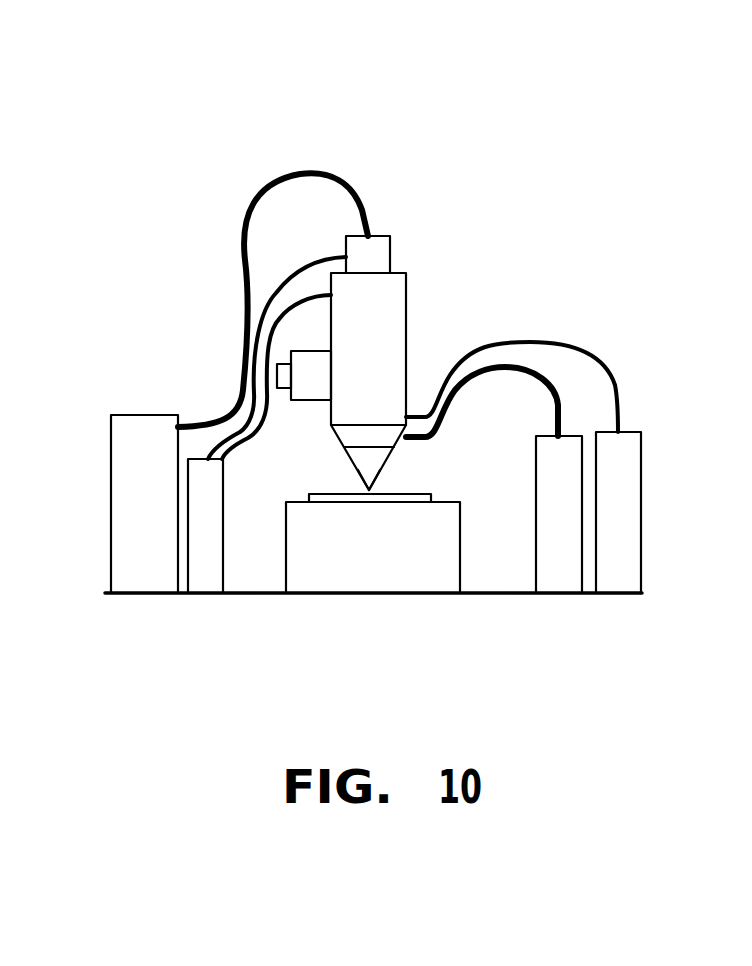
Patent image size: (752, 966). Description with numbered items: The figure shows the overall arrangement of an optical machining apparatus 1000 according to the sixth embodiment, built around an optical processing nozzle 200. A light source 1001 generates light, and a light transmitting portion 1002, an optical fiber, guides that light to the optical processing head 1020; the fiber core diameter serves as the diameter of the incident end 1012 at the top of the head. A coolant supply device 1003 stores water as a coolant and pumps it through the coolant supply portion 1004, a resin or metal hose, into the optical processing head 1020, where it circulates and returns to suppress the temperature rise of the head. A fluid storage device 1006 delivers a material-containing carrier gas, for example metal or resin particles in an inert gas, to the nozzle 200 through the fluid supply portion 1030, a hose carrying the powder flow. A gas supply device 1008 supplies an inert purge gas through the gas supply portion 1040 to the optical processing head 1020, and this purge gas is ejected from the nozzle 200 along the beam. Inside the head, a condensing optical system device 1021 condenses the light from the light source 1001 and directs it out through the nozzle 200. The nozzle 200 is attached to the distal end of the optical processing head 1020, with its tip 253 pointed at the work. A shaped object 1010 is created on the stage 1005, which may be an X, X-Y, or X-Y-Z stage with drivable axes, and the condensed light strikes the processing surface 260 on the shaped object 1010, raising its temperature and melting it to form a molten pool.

The optical machining apparatus 1000 is at (130, 92).
The light source 1001 is at (127, 415).
The light transmitting portion 1002 is at (240, 226).
The coolant supply device 1003 is at (199, 590).
The coolant supply portion 1004 is at (236, 448).
The stage 1005 is at (315, 590).
The fluid storage device 1006 is at (563, 590).
The gas supply device 1008 is at (617, 590).
The shaped object 1010 is at (397, 499).
The incident end 1012 is at (369, 233).
The optical processing head 1020 is at (381, 341).
The condensing optical system device 1021 is at (405, 320).
The fluid supply portion 1030 is at (545, 391).
The gas supply portion 1040 is at (547, 342).
The optical processing nozzle 200 is at (342, 435).
The nozzle tip 253 is at (377, 484).
The processing surface 260 is at (335, 493).